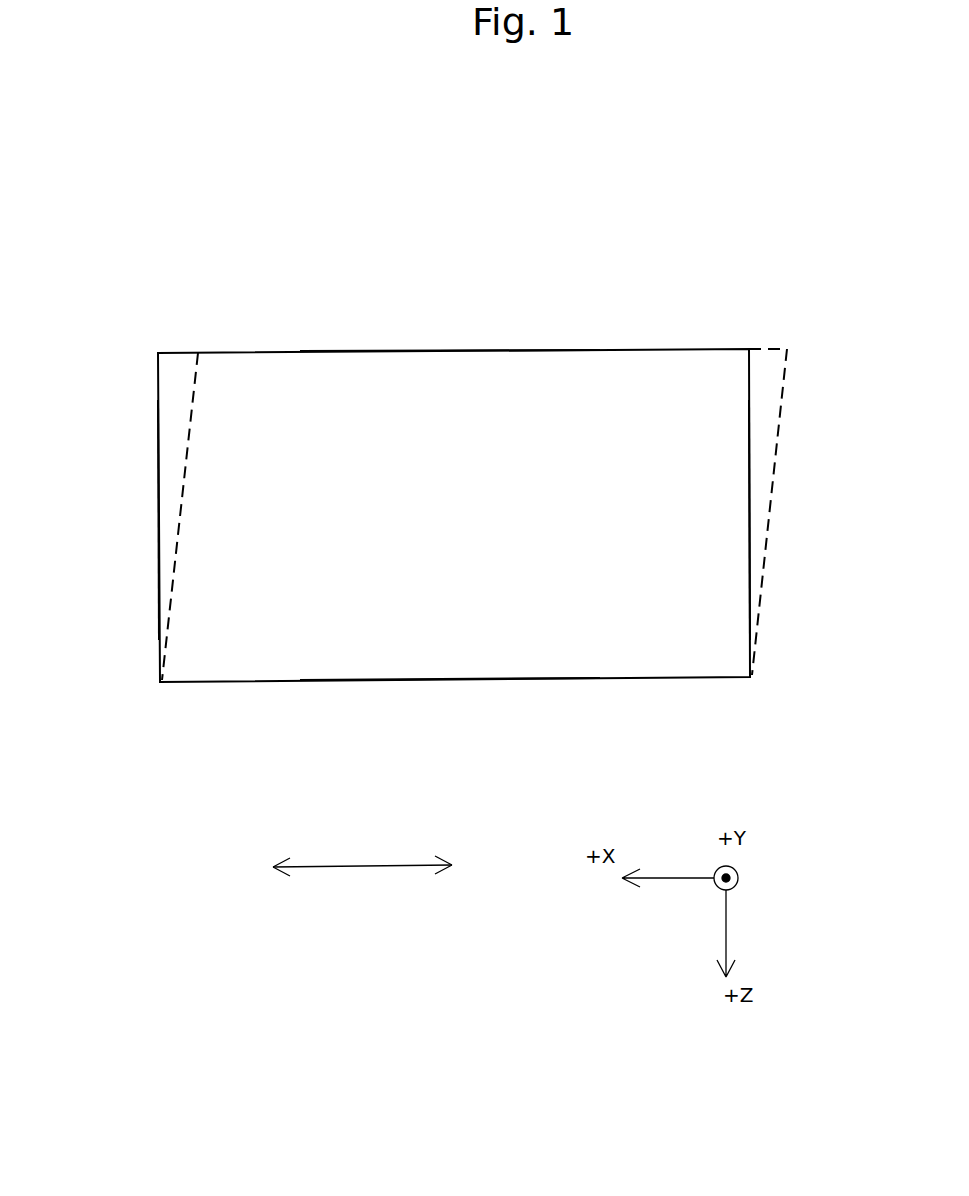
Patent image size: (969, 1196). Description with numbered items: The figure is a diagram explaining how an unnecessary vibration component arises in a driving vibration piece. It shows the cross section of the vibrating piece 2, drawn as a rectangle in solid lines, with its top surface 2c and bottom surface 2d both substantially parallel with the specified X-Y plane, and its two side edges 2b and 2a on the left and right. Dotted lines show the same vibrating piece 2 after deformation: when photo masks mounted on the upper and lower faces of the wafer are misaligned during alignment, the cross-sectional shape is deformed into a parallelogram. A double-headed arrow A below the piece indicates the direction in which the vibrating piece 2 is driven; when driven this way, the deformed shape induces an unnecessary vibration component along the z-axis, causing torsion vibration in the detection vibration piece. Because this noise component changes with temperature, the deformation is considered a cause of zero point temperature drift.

The vibrating piece 2 is at (741, 332).
The right side edge of plate 2a is at (749, 482).
The left side edge of plate 2b is at (159, 505).
The surface 2c is at (443, 350).
The surface 2d is at (432, 681).
The arrow A is at (367, 870).